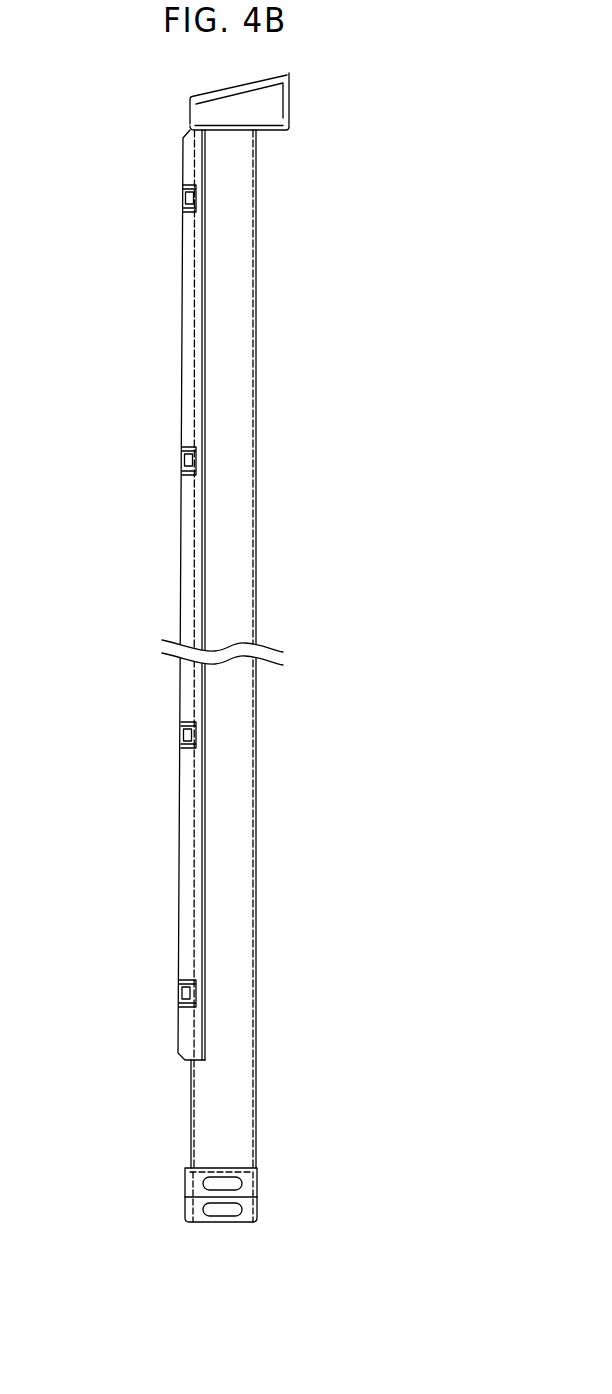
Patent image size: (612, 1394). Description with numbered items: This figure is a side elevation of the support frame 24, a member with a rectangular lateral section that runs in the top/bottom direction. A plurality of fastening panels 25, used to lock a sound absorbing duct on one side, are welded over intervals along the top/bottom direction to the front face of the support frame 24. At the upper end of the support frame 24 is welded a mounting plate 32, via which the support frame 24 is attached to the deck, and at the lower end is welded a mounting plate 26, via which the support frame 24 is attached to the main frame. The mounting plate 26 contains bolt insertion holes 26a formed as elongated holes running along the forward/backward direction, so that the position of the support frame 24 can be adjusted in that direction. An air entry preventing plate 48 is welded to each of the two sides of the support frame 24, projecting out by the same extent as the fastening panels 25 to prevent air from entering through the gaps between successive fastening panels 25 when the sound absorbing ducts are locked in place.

The support frame 24 is at (266, 372).
The fastening panel 25 is at (183, 465).
The mounting plate 26 is at (188, 1193).
The bolt insertion hole 26a is at (242, 1212).
The mounting plate 32 is at (290, 103).
The air entry preventing plate 48 is at (179, 880).